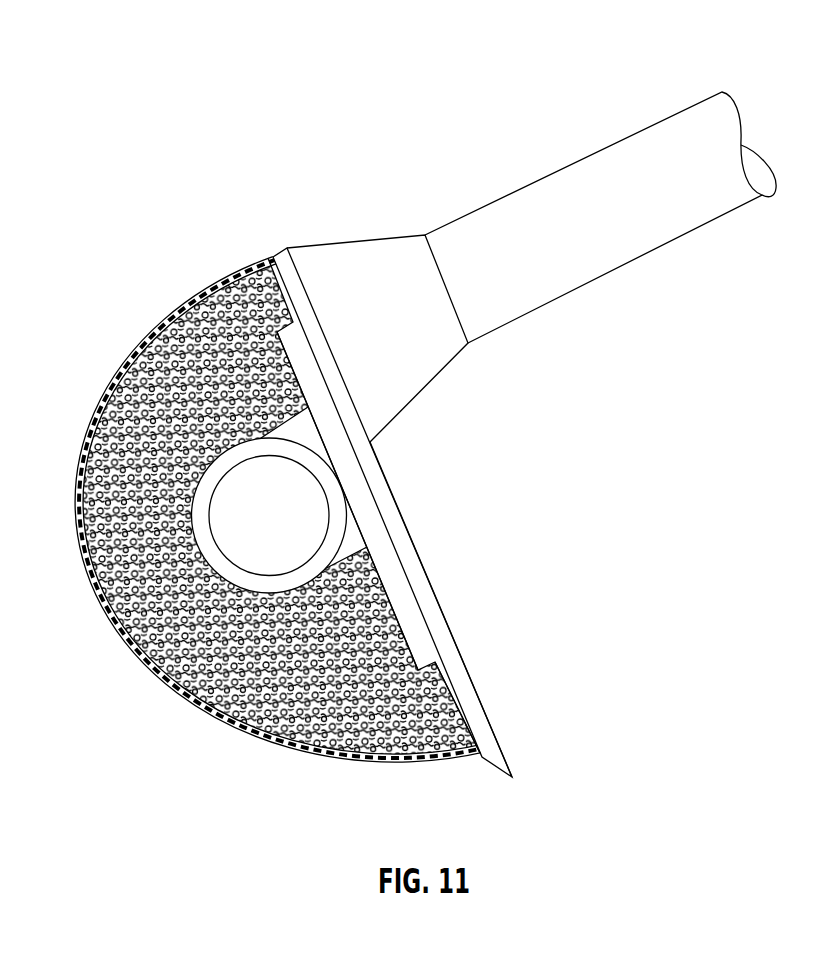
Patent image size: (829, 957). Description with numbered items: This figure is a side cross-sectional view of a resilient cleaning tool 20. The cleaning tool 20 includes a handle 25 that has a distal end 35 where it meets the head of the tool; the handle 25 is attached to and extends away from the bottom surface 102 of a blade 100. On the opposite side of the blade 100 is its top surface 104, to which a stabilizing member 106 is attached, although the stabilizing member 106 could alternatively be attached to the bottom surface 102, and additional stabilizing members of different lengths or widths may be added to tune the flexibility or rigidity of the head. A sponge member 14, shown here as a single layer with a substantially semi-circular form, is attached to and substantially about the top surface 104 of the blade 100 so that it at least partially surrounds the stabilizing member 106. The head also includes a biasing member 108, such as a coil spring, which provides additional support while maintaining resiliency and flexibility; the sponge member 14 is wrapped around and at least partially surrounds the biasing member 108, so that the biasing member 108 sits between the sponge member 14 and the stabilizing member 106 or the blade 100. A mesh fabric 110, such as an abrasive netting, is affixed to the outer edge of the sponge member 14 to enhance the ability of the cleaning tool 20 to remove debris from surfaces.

The resilient cleaning tool 20 is at (438, 407).
The handle 25 is at (563, 167).
The distal end 35 is at (413, 492).
The sponge member 14 is at (369, 497).
The mesh fabric 110 is at (137, 347).
The biasing member 108 is at (200, 540).
The blade 100 is at (413, 530).
The stabilizing member 106 is at (400, 595).
The bottom surface 102 is at (482, 707).
The top surface 104 is at (465, 715).